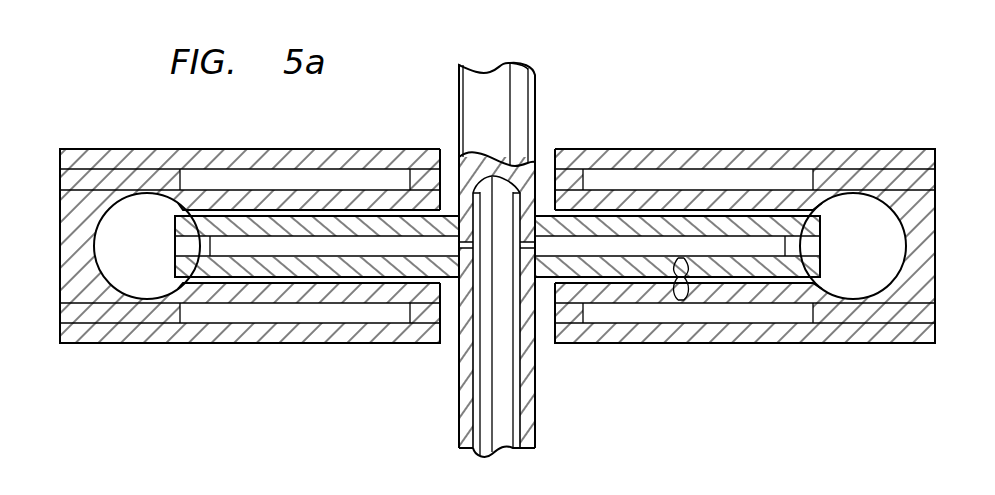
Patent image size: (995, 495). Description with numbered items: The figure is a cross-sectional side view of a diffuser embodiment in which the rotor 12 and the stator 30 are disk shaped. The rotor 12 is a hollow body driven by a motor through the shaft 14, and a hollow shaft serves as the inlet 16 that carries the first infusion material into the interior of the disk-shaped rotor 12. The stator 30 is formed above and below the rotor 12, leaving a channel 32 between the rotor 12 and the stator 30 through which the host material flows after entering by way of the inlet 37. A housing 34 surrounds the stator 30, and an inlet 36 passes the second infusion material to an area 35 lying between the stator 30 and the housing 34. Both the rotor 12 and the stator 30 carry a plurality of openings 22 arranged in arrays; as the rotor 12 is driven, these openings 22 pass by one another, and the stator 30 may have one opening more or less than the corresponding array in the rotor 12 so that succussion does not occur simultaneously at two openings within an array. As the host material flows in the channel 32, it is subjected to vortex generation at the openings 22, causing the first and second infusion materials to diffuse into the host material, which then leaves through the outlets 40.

The rotor 12 is at (340, 216).
The shaft 14 is at (483, 62).
The inlet 16 is at (457, 431).
The openings 22 is at (681, 258).
The stator 30 is at (388, 188).
The channel 32 is at (207, 212).
The housing 34 is at (103, 150).
The area 35 is at (277, 180).
The inlet 36 is at (450, 343).
The inlet 37 is at (452, 148).
The outlet 40 is at (500, 246).